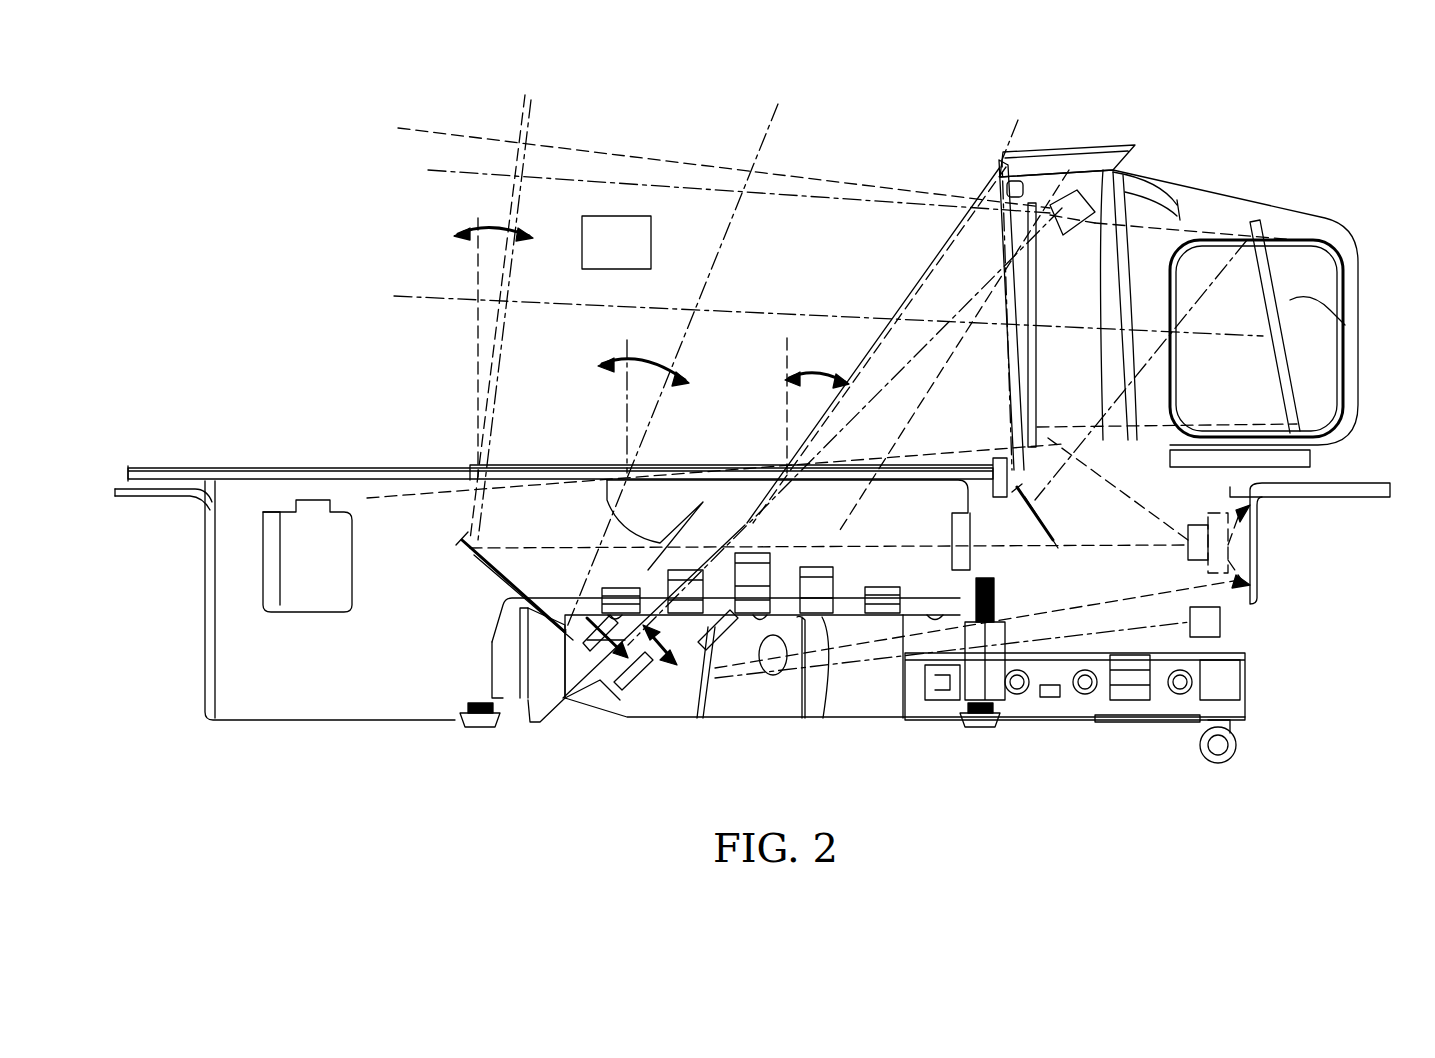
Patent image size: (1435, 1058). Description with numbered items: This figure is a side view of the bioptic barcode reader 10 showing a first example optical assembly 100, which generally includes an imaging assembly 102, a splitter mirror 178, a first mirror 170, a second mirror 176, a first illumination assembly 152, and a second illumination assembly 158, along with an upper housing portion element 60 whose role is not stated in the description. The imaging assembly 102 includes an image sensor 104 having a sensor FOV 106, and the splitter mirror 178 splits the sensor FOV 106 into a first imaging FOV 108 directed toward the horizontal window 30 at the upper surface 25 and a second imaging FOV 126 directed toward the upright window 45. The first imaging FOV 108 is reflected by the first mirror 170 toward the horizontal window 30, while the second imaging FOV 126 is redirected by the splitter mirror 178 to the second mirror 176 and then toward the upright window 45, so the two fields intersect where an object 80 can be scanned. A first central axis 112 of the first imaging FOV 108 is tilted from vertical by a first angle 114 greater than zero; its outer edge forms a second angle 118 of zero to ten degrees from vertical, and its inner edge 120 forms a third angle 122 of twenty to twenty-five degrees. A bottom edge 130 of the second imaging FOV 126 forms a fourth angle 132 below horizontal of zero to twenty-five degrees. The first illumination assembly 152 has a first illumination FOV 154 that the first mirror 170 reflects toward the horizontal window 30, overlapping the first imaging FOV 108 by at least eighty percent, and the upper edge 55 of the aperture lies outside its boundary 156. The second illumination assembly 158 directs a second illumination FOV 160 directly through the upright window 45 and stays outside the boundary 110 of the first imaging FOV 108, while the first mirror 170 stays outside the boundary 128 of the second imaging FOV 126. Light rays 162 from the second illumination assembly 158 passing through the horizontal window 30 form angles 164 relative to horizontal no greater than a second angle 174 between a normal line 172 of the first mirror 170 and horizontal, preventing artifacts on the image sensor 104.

The bioptic barcode reader 10 is at (1178, 72).
The upper surface 25 is at (290, 467).
The horizontal window 30 is at (547, 468).
The upright window 45 is at (1038, 290).
The upper edge 55 is at (997, 163).
The housing 60 is at (1088, 138).
The object 80 is at (616, 242).
The first example optical assembly 100 is at (1262, 512).
The imaging assembly 102 is at (1240, 580).
The image sensor 104 is at (1228, 540).
The sensor FOV 106 is at (1222, 620).
The first imaging FOV 108 is at (870, 547).
The boundary 110 is at (515, 110).
The first central axis 112 is at (765, 138).
The first angle 114 is at (634, 358).
The second angle 118 is at (478, 220).
The inner edge 120 is at (1016, 124).
The third angle 122 is at (822, 374).
The second imaging FOV 126 is at (1300, 466).
The boundary 128 is at (618, 158).
The bottom edge 130 is at (976, 455).
The fourth angle 132 is at (984, 324).
The first illumination assembly 152 is at (1240, 655).
The first illumination FOV 154 is at (875, 645).
The boundary 156 is at (767, 493).
The second illumination assembly 158 is at (1095, 205).
The second illumination FOV 160 is at (811, 200).
The light rays 162 is at (970, 345).
The angles 164 is at (715, 632).
The first mirror 170 is at (488, 572).
The normal line 172 is at (612, 517).
The second angle 174 is at (592, 670).
The second mirror 176 is at (1345, 325).
The splitter mirror 178 is at (1030, 545).